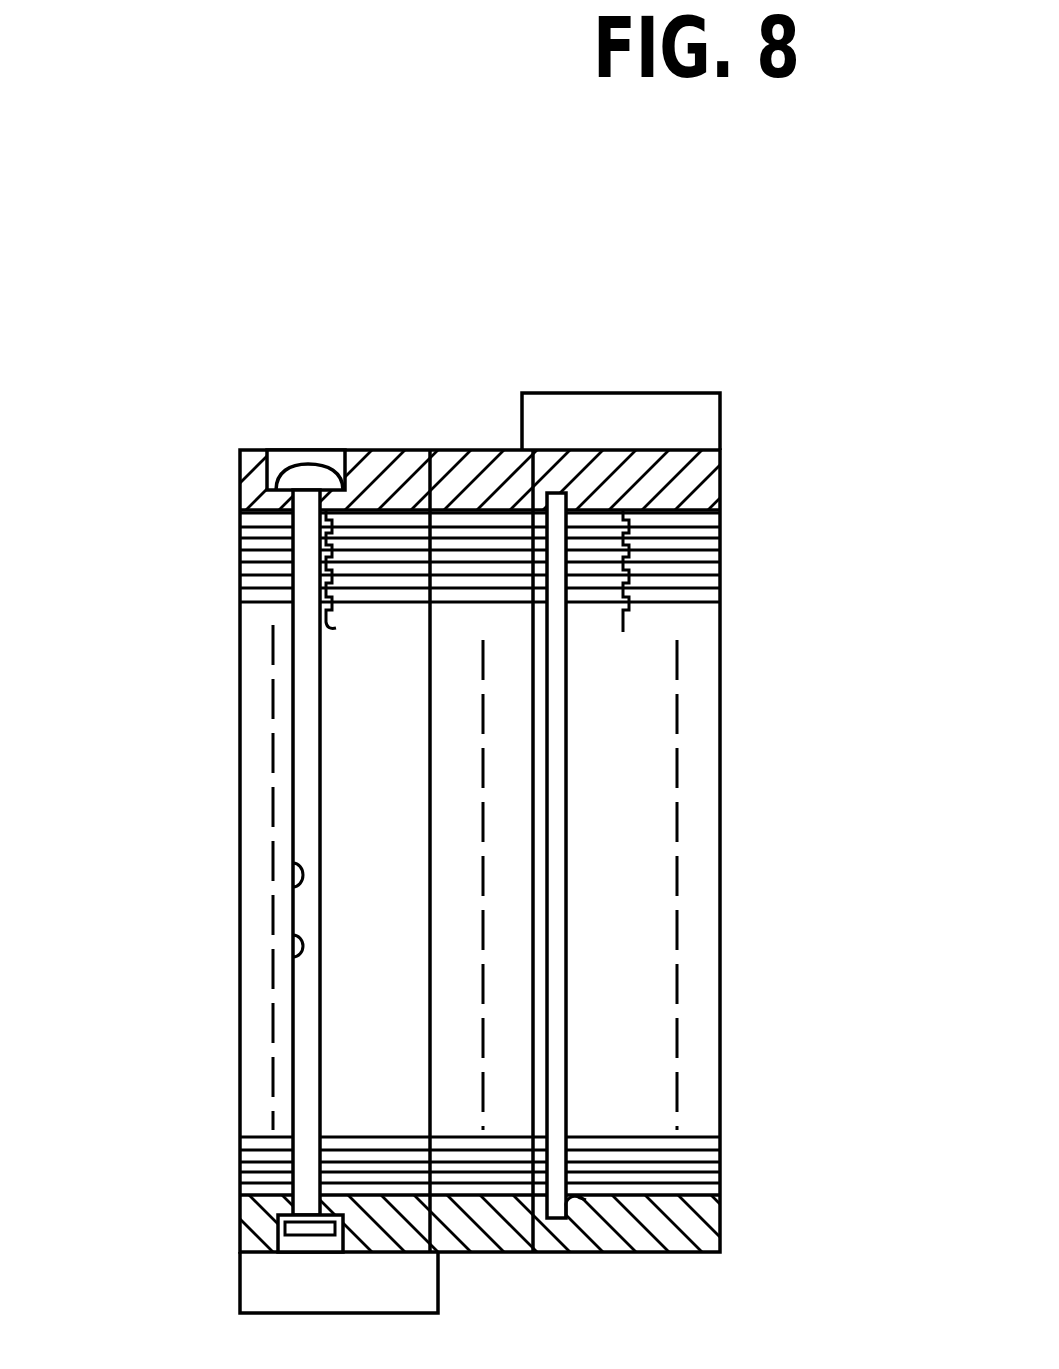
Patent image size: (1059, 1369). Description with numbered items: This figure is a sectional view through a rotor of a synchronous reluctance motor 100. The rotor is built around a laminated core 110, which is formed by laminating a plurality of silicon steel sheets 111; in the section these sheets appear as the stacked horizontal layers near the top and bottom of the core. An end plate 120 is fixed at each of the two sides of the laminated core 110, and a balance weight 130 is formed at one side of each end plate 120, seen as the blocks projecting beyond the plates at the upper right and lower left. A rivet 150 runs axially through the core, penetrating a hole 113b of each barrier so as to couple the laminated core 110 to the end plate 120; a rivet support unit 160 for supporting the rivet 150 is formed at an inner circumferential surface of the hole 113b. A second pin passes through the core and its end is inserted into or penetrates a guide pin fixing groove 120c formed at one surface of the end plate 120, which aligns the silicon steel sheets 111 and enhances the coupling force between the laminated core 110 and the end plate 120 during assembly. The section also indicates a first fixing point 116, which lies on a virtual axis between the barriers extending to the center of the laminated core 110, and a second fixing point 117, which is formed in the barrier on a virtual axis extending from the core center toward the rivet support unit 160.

The rotor of a synchronous reluctance motor 100 is at (147, 222).
The laminated core 110 is at (724, 637).
The silicon steel sheets 111 is at (720, 540).
The hole of the barrier 113b is at (293, 893).
The first fixing point 116 is at (623, 630).
The second fixing point 117 is at (325, 612).
The end plate 120 is at (720, 480).
The guide pin fixing groove 120c is at (590, 500).
The balance weight 130 is at (720, 430).
The rivet 150 is at (307, 820).
The rivet support unit 160 is at (297, 953).